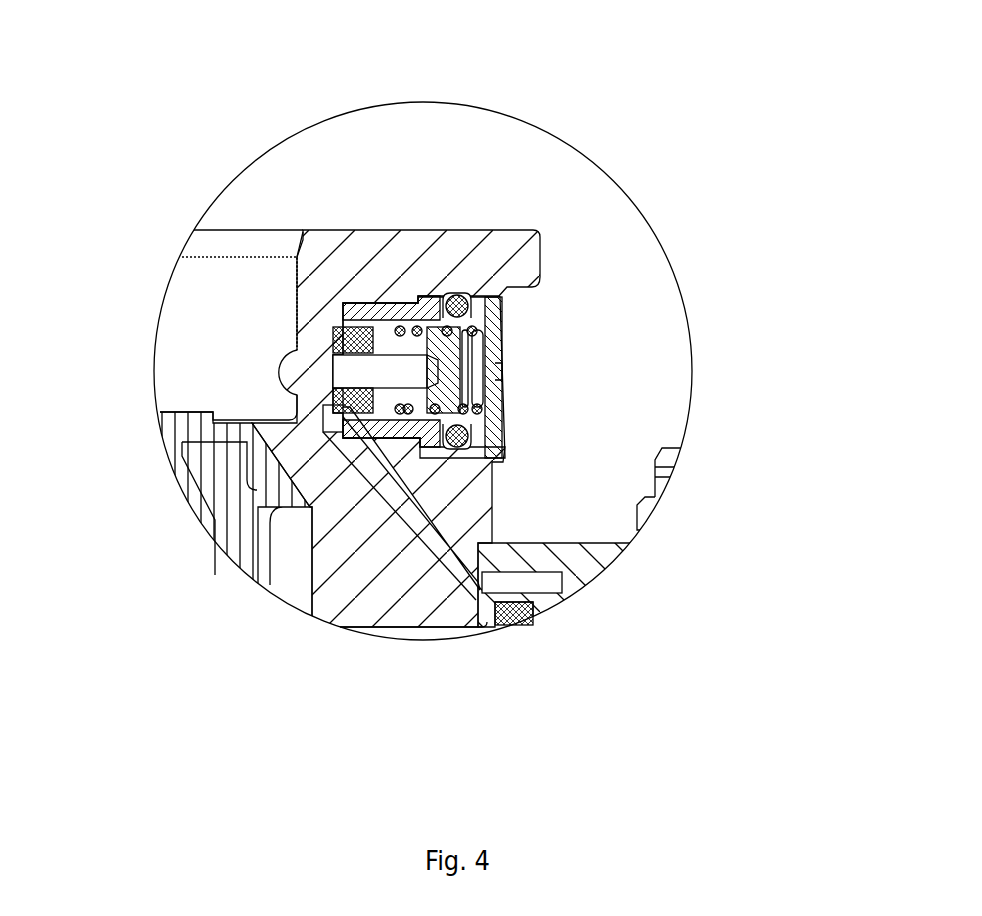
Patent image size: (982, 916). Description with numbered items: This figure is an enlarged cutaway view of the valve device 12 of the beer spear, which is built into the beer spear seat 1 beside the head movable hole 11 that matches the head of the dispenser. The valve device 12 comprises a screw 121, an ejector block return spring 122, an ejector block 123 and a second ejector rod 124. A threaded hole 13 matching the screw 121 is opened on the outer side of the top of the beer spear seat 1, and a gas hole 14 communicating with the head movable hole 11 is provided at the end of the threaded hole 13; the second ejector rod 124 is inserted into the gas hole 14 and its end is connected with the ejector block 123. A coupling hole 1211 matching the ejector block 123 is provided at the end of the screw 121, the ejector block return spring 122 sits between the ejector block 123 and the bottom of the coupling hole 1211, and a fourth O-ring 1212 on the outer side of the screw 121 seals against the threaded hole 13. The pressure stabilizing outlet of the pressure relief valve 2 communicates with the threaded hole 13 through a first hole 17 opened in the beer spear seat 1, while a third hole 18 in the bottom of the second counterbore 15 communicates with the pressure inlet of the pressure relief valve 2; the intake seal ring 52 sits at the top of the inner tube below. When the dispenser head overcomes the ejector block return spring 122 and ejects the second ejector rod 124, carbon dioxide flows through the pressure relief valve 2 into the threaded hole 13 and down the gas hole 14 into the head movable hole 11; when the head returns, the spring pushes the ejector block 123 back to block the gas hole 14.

The beer spear seat 1 is at (325, 260).
The head movable hole 11 is at (213, 313).
The valve device 12 is at (460, 372).
The screw 121 is at (495, 332).
The ejector block return spring 122 is at (475, 298).
The ejector block 123 is at (450, 390).
The coupling hole 1211 is at (476, 416).
The fourth O-ring 1212 is at (484, 425).
The second ejector rod 124 is at (326, 380).
The threaded hole 13 is at (330, 423).
The gas hole 14 is at (307, 347).
The second counterbore 15 is at (287, 550).
The first hole 17 is at (395, 502).
The third hole 18 is at (420, 630).
The pressure relief valve 2 is at (565, 557).
The intake seal ring 52 is at (230, 473).